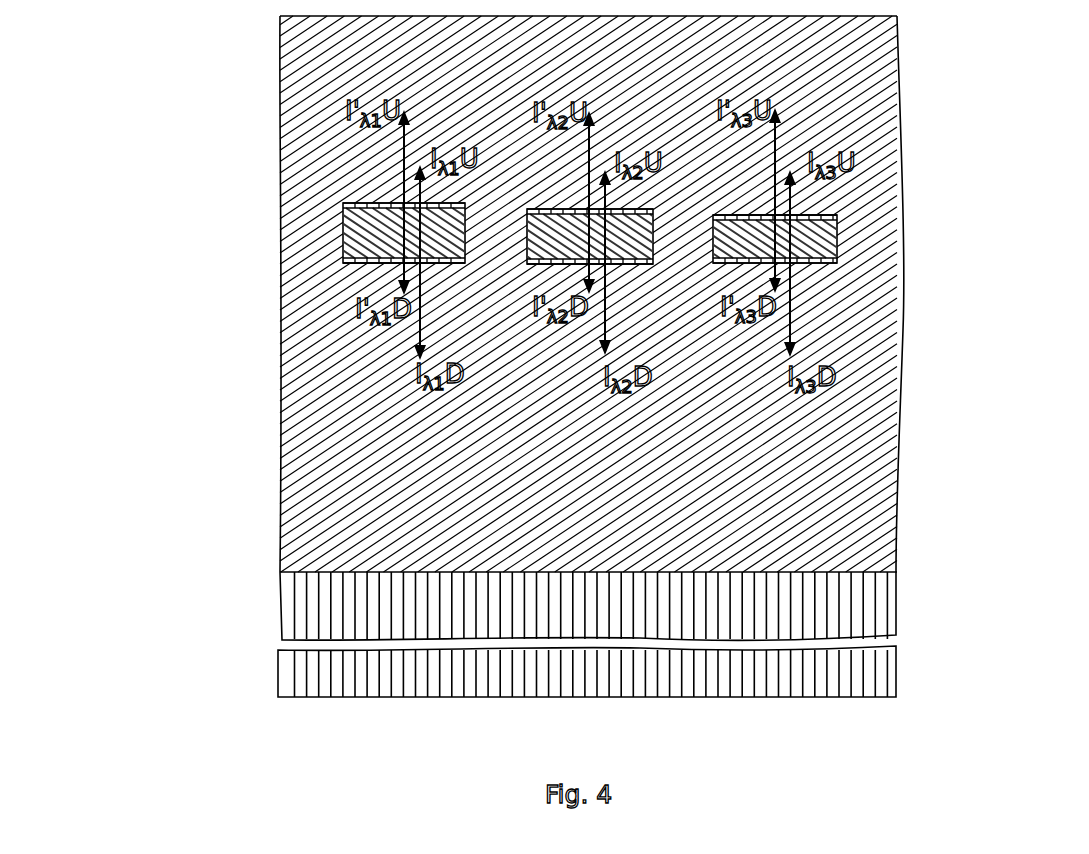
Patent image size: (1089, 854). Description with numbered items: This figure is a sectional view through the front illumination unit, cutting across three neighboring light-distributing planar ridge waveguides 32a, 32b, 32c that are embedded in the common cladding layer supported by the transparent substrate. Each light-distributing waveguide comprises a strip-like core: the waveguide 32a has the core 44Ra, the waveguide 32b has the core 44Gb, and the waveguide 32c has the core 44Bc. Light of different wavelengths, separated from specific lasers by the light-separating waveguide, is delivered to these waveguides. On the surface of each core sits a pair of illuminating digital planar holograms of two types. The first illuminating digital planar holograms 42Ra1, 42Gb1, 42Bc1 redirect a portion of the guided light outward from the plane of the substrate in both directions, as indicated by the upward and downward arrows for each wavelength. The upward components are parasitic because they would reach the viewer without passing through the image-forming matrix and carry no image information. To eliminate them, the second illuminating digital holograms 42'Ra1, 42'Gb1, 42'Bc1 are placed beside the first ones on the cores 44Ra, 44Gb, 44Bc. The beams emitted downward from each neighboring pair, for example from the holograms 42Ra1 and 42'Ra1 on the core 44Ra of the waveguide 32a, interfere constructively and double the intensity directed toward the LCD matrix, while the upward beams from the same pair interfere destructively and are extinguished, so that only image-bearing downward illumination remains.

The strip-like core 44Ra is at (367, 232).
The second illuminating digital hologram 42'Ra1 is at (308, 179).
The first illuminating digital planar hologram 42Ra1 is at (357, 265).
The light-distributing waveguide 32a is at (373, 268).
The strip-like core 44Gb is at (527, 252).
The second illuminating digital hologram 42'Gb1 is at (401, 121).
The first illuminating digital planar hologram 42Gb1 is at (650, 265).
The light-distributing waveguide 32b is at (632, 267).
The strip-like core 44Bc is at (817, 233).
The second illuminating digital hologram 42'Bc1 is at (889, 164).
The first illuminating digital planar hologram 42Bc1 is at (817, 263).
The light-distributing waveguide 32c is at (843, 210).